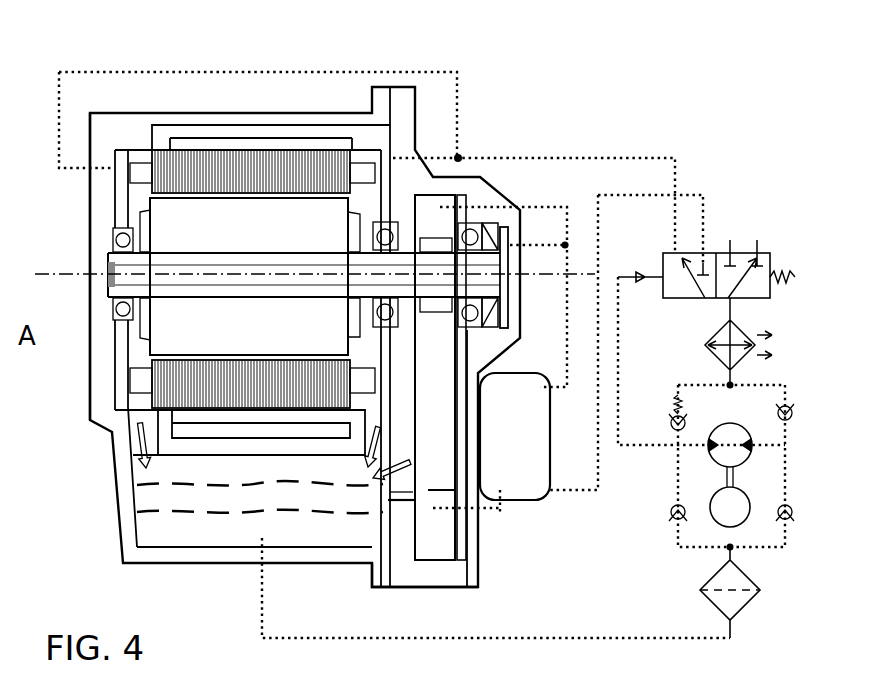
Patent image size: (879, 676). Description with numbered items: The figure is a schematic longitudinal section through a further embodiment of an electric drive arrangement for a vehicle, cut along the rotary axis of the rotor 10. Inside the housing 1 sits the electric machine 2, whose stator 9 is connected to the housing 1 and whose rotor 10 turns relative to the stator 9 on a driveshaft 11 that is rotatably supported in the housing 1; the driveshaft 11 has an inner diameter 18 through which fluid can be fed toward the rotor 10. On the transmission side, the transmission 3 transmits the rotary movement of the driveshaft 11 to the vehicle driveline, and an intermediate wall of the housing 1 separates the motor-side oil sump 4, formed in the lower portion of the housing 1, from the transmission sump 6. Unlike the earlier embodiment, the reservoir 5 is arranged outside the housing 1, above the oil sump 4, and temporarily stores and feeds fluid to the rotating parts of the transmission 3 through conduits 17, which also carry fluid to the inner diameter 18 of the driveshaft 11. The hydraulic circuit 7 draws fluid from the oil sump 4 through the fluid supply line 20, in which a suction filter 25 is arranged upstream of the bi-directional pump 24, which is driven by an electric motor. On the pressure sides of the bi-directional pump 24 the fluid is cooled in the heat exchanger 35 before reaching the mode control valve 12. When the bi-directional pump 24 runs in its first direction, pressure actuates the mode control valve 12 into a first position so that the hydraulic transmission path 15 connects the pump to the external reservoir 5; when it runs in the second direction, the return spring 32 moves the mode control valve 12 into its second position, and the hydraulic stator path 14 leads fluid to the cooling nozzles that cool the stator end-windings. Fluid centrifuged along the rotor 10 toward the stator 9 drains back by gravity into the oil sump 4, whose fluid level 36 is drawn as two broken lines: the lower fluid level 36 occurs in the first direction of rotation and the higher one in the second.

The housing 1 is at (118, 453).
The electric machine 2 is at (97, 402).
The transmission 3 is at (448, 404).
The oil sump 4 is at (213, 535).
The reservoir 5 is at (524, 462).
The transmission sump 6 is at (432, 548).
The hydraulic circuit 7 is at (707, 116).
The stator 9 is at (325, 172).
The rotor 10 is at (282, 246).
The driveshaft 11 is at (118, 243).
The mode control valve 12 is at (745, 252).
The hydraulic stator path 14 is at (458, 108).
The hydraulic transmission path 15 is at (616, 195).
The conduits 17 is at (547, 243).
The inner diameter of the driveshaft 18 is at (168, 277).
The fluid supply line 20 is at (545, 640).
The bi-directional pump 24 is at (735, 440).
The suction filter 25 is at (738, 600).
The return spring 32 is at (788, 268).
The heat exchanger 35 is at (748, 335).
The fluid level 36 is at (195, 512).